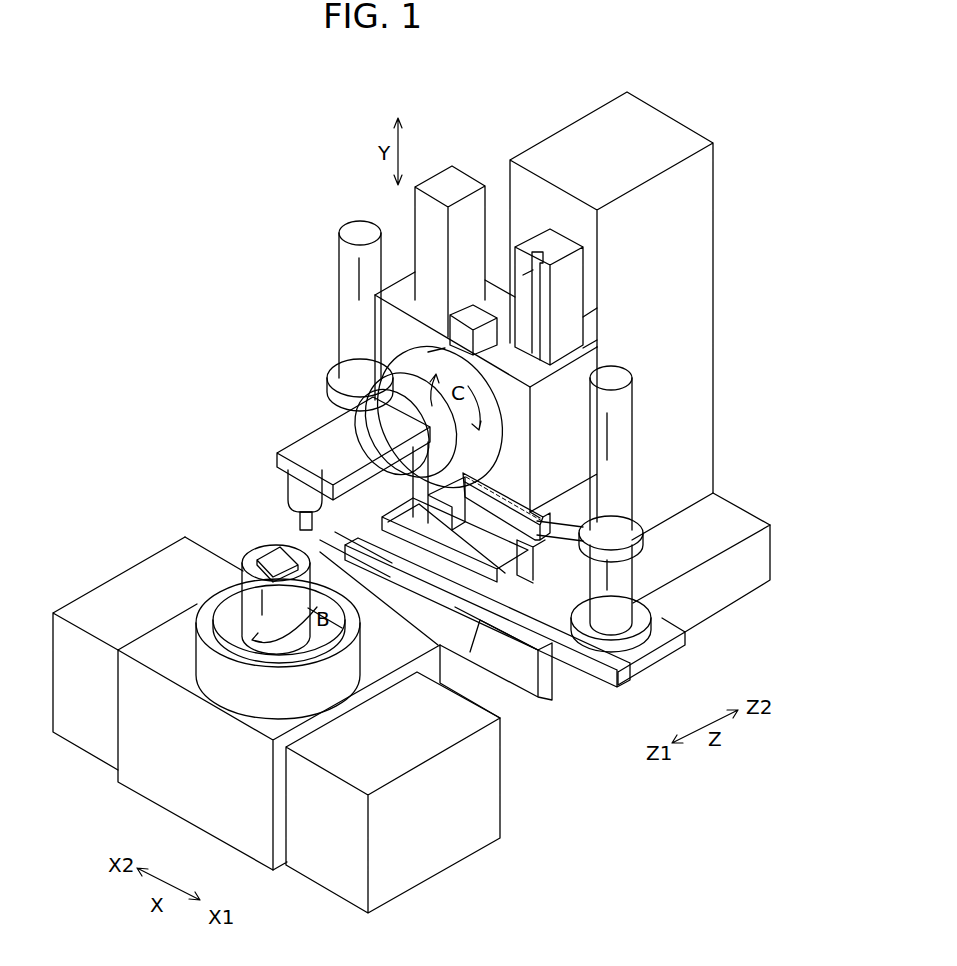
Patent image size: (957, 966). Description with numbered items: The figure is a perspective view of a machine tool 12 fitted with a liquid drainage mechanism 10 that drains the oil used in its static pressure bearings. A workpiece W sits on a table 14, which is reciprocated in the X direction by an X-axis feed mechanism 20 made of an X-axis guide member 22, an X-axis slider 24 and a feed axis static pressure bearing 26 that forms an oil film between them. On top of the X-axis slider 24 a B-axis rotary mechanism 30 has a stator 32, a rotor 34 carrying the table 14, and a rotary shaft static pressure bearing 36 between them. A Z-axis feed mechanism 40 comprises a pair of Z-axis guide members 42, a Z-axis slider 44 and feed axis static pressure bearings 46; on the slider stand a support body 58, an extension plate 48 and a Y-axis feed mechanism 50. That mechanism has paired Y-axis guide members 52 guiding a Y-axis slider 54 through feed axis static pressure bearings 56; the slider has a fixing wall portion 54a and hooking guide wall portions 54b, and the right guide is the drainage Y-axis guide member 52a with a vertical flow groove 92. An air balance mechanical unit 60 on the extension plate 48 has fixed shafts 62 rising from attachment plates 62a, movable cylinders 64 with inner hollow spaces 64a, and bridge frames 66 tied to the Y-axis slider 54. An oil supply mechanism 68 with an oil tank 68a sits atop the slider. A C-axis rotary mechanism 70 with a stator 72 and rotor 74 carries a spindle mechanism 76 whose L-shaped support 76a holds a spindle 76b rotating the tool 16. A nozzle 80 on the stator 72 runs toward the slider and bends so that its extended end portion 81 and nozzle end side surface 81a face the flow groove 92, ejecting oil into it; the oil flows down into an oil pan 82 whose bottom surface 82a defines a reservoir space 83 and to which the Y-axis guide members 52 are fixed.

The liquid drainage mechanism 10 is at (525, 483).
The machine tool 12 is at (242, 137).
The table 14 is at (240, 565).
The tool 16 is at (295, 518).
The X-axis feed mechanism 20 is at (448, 893).
The X-axis guide member 22 is at (150, 563).
The X-axis slider 24 is at (137, 637).
The feed axis static pressure bearing 26 is at (327, 722).
The B-axis rotary mechanism 30 is at (184, 676).
The stator 32 is at (248, 690).
The rotor 34 is at (222, 628).
The rotary shaft static pressure bearing 36 is at (358, 638).
The Z-axis feed mechanism 40 is at (574, 714).
The Z-axis guide members 42 is at (400, 590).
The Z-axis slider 44 is at (750, 565).
The feed axis static pressure bearing 46 is at (512, 641).
The extension plate 48 is at (660, 660).
The Y-axis feed mechanism 50 is at (397, 202).
The Y-axis guide members 52 is at (435, 190).
The drainage Y-axis guide member 52a is at (545, 238).
The Y-axis slider 54 is at (481, 397).
The fixing wall portion 54a is at (388, 329).
The guide wall portions 54b is at (566, 400).
The feed axis static pressure bearing 56 is at (598, 317).
The support body 58 is at (698, 199).
The air balance mechanical unit 60 is at (757, 395).
The fixed shafts 62 is at (640, 543).
The attachment plate 62a is at (648, 607).
The movable cylinders 64 is at (635, 425).
The inner hollow space 64a is at (345, 264).
The bridge frame 66 is at (333, 372).
The oil supply mechanism 68 is at (486, 222).
The oil tank 68a is at (478, 318).
The C-axis rotary mechanism 70 is at (518, 429).
The stator 72 is at (430, 350).
The rotor 74 is at (352, 418).
The spindle mechanism 76 is at (186, 425).
The support 76a is at (296, 458).
The spindle 76b is at (288, 490).
The nozzle 80 is at (503, 488).
The extended end portion 81 is at (538, 548).
The nozzle end side surface 81a is at (612, 533).
The oil pan 82 is at (422, 504).
The bottom surface 82a is at (490, 585).
The reservoir space 83 is at (383, 478).
The flow groove 92 is at (556, 275).
The workpiece W is at (270, 560).